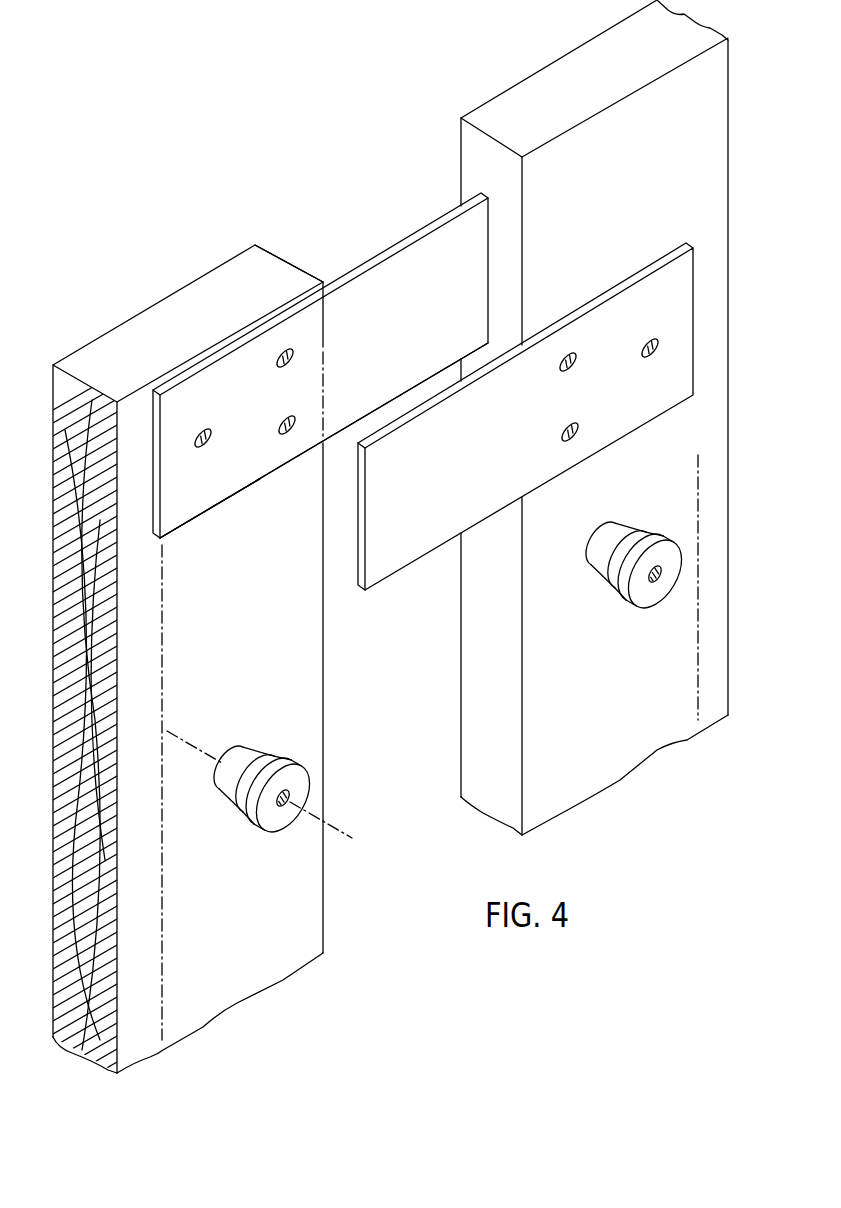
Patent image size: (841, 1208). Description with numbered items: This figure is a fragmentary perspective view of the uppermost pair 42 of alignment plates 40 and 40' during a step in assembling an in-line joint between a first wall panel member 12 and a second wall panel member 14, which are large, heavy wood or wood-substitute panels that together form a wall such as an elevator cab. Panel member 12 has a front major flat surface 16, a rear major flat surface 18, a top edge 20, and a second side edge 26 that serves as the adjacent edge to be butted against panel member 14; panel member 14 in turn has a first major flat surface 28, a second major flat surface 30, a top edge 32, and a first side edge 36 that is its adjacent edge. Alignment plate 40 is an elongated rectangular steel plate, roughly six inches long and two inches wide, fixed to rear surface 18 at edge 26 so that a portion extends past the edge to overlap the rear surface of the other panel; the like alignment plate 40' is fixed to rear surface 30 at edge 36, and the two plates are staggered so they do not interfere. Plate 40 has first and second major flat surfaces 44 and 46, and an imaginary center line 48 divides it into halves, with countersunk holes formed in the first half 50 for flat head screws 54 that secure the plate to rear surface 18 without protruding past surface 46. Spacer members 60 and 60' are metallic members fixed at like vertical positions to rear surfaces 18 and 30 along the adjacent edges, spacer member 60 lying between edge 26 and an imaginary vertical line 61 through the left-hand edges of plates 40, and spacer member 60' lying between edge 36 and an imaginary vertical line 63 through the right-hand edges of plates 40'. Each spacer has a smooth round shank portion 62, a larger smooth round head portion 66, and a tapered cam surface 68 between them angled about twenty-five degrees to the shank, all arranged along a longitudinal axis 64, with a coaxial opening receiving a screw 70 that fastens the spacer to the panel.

The first wall panel member 12 is at (177, 290).
The second wall panel member 14 is at (493, 99).
The front major flat surface 16 is at (137, 314).
The rear major flat surface 18 is at (322, 722).
The top edge 20 is at (235, 272).
The second side edge 26 is at (285, 262).
The first major flat surface 28 is at (542, 68).
The second major flat surface 30 is at (598, 779).
The top edge 32 is at (602, 47).
The first side edge 36 is at (461, 155).
The alignment plate 40 is at (320, 365).
The alignment plate 40' is at (525, 427).
The pair of alignment plates 42 is at (338, 436).
The first major flat surface 44 is at (398, 243).
The second major flat surface 46 is at (432, 240).
The imaginary center line 48 is at (326, 344).
The first half 50 is at (217, 493).
The flat head screws 54 is at (279, 368).
The spacer member 60 is at (259, 790).
The spacer member 60' is at (632, 572).
The imaginary vertical line 61 is at (164, 644).
The shank portion 62 is at (250, 755).
The imaginary vertical line 63 is at (697, 620).
The longitudinal axis 64 is at (205, 752).
The head portion 66 is at (284, 766).
The cam surface 68 is at (240, 795).
The screw 70 is at (283, 807).